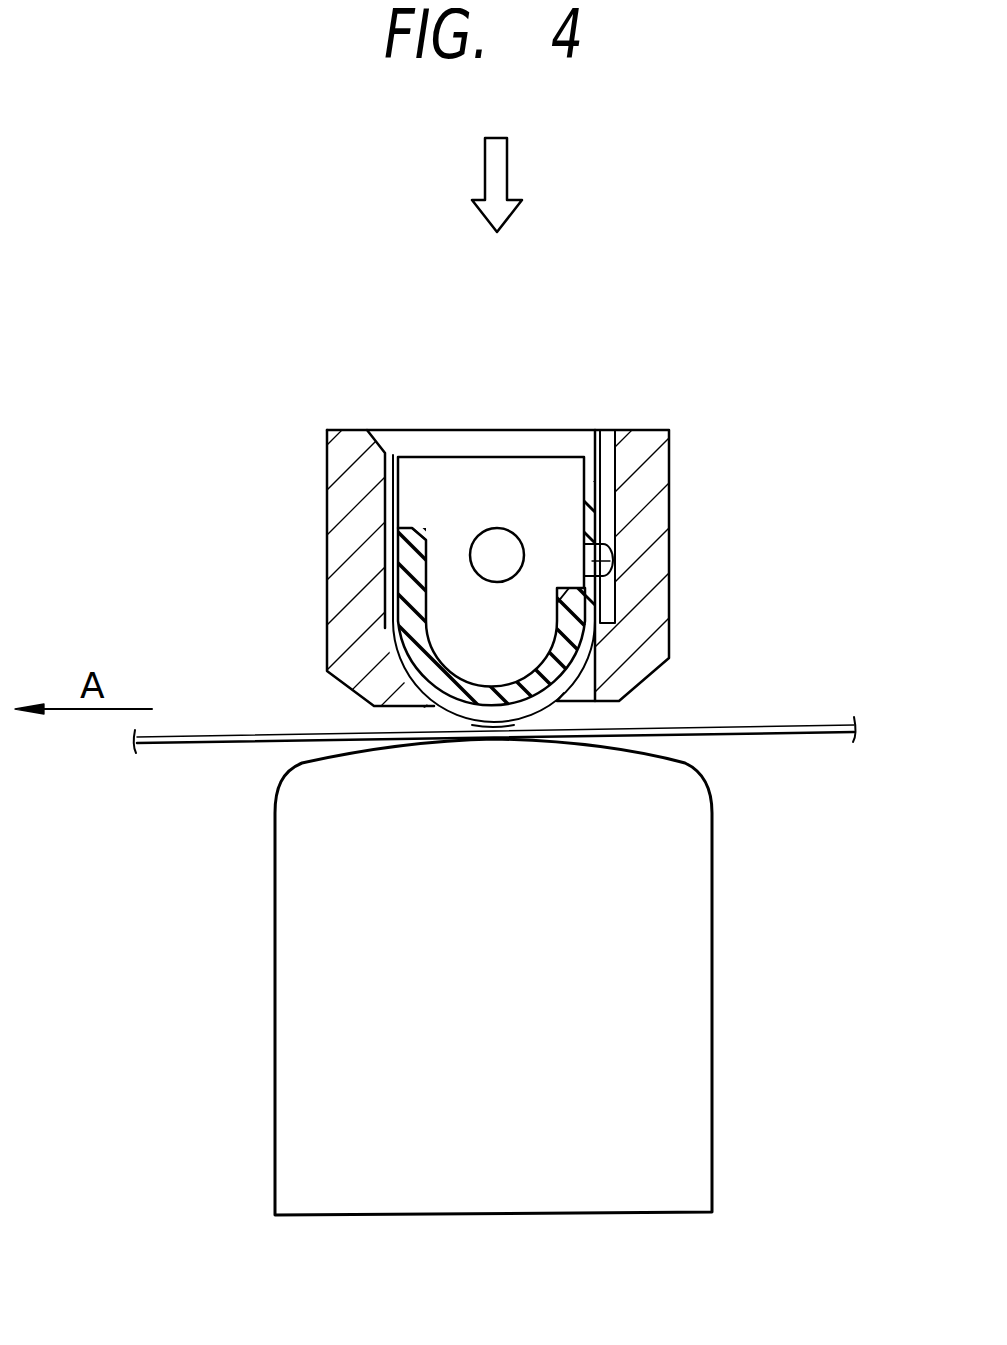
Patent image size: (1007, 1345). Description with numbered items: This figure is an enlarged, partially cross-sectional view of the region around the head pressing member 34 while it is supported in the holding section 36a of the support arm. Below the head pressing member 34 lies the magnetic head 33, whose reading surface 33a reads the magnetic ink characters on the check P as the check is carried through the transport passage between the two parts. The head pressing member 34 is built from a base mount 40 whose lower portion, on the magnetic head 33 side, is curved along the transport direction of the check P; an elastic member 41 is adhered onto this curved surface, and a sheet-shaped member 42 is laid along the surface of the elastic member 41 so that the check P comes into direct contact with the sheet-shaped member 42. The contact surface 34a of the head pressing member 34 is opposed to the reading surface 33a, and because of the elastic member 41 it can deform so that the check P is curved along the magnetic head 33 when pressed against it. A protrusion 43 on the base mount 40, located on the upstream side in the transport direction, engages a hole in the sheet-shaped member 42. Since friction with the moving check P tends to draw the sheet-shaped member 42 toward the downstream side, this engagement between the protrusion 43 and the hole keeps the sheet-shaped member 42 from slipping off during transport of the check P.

The magnetic head 33 is at (277, 1093).
The reading surface 33a is at (600, 715).
The head pressing member 34 is at (530, 450).
The contact surface 34a is at (493, 730).
The holding section 36a is at (326, 550).
The base mount 40 is at (447, 454).
The elastic member 41 is at (405, 635).
The sheet-shaped member 42 is at (430, 720).
The protrusion 43 is at (603, 560).
The check P is at (790, 732).